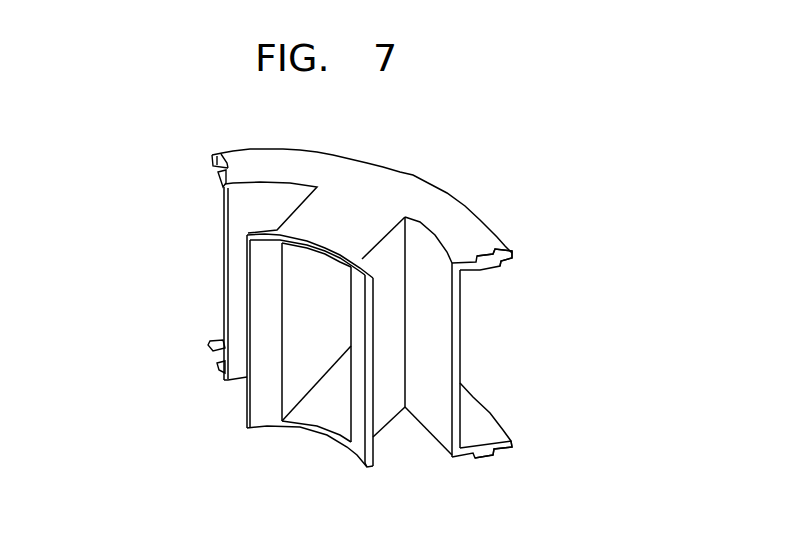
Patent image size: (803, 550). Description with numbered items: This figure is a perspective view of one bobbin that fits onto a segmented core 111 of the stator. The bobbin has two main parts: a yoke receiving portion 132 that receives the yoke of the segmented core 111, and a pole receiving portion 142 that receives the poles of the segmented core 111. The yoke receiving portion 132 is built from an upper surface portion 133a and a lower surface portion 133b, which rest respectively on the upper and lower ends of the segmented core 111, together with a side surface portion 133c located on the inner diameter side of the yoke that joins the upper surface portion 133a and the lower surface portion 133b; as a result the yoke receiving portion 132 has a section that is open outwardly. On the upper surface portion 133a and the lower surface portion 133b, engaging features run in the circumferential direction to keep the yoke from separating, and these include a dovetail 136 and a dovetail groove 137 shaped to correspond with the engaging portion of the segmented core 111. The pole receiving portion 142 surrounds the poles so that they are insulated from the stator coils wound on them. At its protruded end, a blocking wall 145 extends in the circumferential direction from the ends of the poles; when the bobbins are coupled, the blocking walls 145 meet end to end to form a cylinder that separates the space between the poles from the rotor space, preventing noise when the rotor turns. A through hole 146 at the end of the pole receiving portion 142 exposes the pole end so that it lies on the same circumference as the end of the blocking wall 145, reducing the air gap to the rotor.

The segmented core 111 is at (168, 145).
The yoke receiving portion 132 is at (637, 220).
The upper surface portion 133a is at (423, 209).
The lower surface portion 133b is at (543, 401).
The side surface portion 133c is at (543, 360).
The dovetail 136 is at (472, 390).
The dovetail groove 137 is at (165, 263).
The pole receiving portion 142 is at (407, 374).
The blocking wall 145 is at (295, 382).
The through hole 146 is at (326, 421).